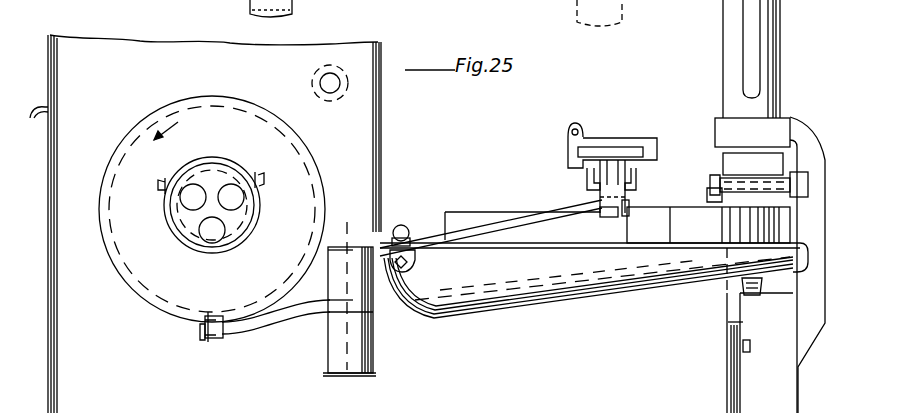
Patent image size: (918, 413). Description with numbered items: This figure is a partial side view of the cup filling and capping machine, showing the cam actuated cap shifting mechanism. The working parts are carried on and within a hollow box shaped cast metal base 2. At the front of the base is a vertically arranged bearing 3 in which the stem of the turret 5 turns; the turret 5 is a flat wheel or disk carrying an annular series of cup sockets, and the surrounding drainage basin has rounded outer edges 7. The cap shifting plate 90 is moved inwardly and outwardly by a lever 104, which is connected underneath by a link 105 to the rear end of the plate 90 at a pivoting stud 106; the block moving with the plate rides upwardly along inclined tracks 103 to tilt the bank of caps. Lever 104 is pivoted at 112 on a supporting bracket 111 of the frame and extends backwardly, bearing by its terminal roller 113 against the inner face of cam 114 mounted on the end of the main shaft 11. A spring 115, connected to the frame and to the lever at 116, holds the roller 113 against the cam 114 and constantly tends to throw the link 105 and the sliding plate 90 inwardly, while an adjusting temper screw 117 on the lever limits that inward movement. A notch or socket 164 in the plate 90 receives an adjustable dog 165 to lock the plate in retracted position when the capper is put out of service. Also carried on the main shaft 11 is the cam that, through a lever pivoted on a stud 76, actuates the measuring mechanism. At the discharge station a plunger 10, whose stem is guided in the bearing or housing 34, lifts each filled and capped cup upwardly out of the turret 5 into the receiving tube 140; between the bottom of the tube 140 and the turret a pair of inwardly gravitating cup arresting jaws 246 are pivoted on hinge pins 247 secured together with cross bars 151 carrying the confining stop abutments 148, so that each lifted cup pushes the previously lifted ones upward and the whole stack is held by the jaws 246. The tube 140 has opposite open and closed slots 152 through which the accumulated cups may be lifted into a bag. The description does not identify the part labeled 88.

The base 2 is at (514, 395).
The bearing 3 is at (640, 247).
The turret 5 is at (708, 225).
The outer edges 7 is at (514, 261).
The discharging plunger 10 is at (742, 287).
The main shaft 11 is at (218, 186).
The bearing 34 is at (760, 330).
The stud 76 is at (322, 80).
The bracket 88 is at (658, 155).
The plate 90 is at (614, 156).
The inclined tracks 103 is at (630, 182).
The lever 104 is at (492, 228).
The link 105 is at (628, 216).
The pivoting stud 106 is at (606, 215).
The supporting bracket 111 is at (334, 344).
The pivot 112 is at (356, 285).
The terminal roller 113 is at (200, 321).
The cam 114 is at (212, 209).
The spring 115 is at (405, 228).
The spring connection 116 is at (412, 251).
The adjusting temper screw 117 is at (404, 266).
The receiving cylinder 140 is at (722, 8).
The stop abutments 148 is at (723, 172).
The cross bars 151 is at (706, 195).
The slots 152 is at (752, 40).
The notch 164 is at (568, 156).
The adjustable dog 165 is at (580, 128).
The cup arresting jaws 246 is at (780, 160).
The hinge pins 247 is at (794, 128).